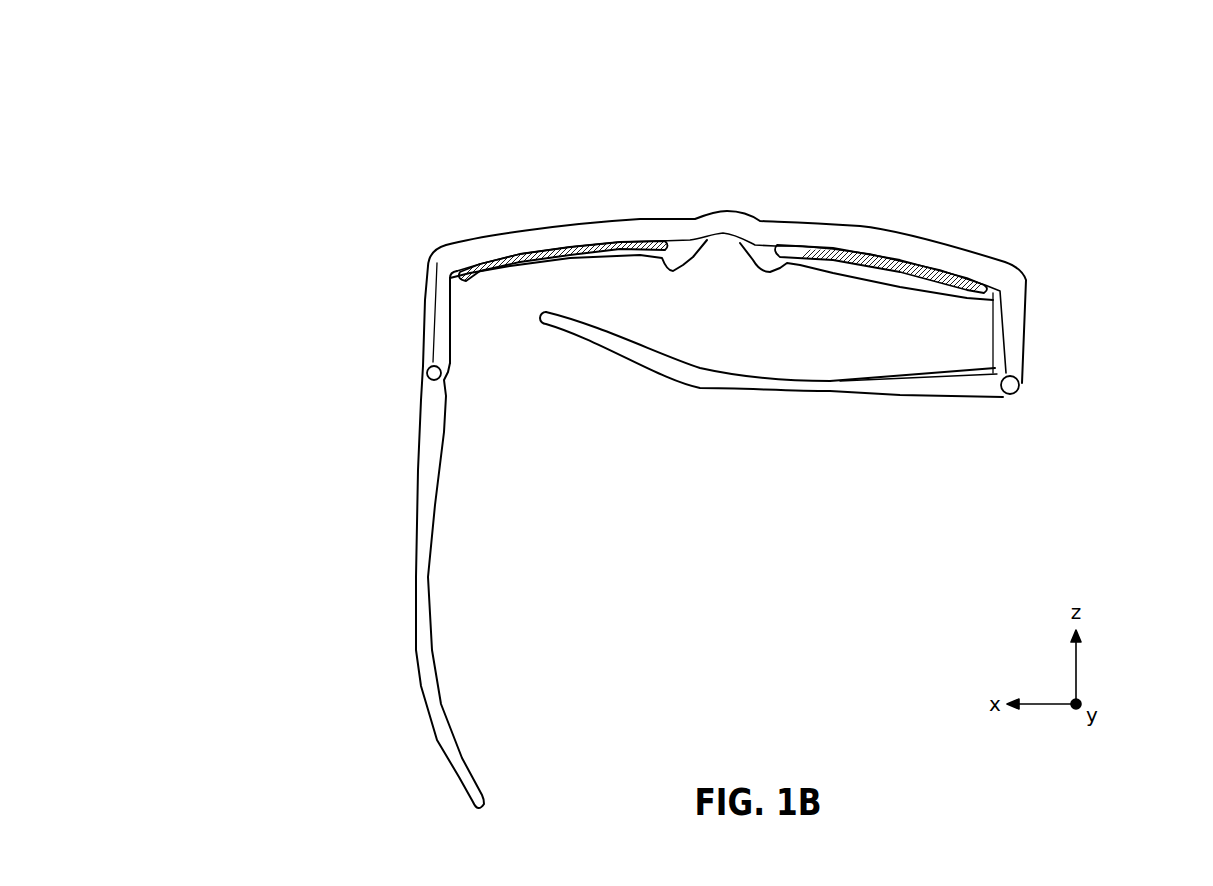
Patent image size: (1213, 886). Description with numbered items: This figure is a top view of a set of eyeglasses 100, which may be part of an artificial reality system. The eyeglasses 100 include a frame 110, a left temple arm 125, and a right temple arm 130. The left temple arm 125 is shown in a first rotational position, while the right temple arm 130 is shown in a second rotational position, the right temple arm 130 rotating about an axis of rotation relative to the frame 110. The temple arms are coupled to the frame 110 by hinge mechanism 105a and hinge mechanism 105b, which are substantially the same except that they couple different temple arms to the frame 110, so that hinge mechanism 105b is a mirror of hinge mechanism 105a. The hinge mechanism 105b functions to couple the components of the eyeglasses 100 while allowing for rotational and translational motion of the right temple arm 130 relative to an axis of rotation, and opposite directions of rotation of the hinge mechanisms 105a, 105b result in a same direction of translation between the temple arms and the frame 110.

The eyeglasses 100 is at (287, 76).
The frame 110 is at (528, 237).
The hinge mechanism 105a is at (427, 374).
The hinge mechanism 105b is at (1014, 385).
The left temple arm 125 is at (435, 417).
The right temple arm 130 is at (933, 387).